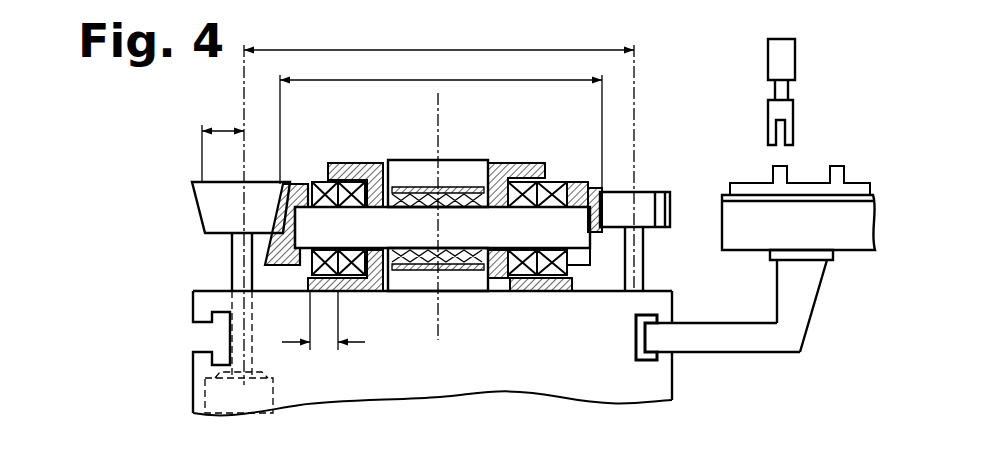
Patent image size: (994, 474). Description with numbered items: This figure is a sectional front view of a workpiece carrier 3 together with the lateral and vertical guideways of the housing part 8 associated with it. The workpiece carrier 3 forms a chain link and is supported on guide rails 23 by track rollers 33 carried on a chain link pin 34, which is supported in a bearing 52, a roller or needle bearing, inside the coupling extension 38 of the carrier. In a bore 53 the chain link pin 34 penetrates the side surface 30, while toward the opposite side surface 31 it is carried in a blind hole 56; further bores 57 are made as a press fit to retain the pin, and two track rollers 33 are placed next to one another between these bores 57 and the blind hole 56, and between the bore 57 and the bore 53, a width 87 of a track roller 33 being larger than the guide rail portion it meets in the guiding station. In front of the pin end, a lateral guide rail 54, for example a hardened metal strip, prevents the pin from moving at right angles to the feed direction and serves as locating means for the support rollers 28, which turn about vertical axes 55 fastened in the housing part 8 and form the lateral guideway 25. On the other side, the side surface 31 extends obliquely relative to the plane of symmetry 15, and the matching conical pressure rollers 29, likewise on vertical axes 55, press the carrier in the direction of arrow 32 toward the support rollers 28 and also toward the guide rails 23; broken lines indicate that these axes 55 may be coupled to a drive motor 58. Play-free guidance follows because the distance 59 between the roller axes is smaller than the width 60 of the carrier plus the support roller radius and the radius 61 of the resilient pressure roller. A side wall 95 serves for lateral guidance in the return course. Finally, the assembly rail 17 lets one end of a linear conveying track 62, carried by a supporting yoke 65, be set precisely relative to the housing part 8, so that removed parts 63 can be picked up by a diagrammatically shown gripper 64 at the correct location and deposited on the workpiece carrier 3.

The workpiece carrier 3 is at (534, 152).
The housing part 8 is at (650, 366).
The plane of symmetry 15 is at (440, 320).
The assembly rail 17 is at (650, 380).
The guide rails 23 is at (350, 284).
The lateral guideway 25 is at (621, 175).
The support rollers 28 is at (670, 207).
The pressure rollers 29 is at (197, 195).
The side surface 30 is at (599, 264).
The side surface 31 is at (233, 246).
The arrow 32 is at (280, 207).
The track rollers 33 is at (323, 181).
The chain link pin 34 is at (458, 228).
The coupling extension 38 is at (450, 160).
The bearing 52 is at (484, 271).
The bore 53 is at (627, 169).
The lateral guide rail 54 is at (602, 202).
The vertical axes 55 is at (230, 268).
The blind hole 56 is at (300, 184).
The bores 57 is at (380, 183).
The drive motor 58 is at (193, 404).
The distance 59 is at (521, 49).
The width 60 is at (549, 80).
The radius 61 is at (227, 130).
The linear conveying track 62 is at (822, 225).
The parts 63 is at (780, 183).
The gripper 64 is at (783, 63).
The supporting yoke 65 is at (802, 297).
The width 87 is at (327, 345).
The side wall 95 is at (553, 165).